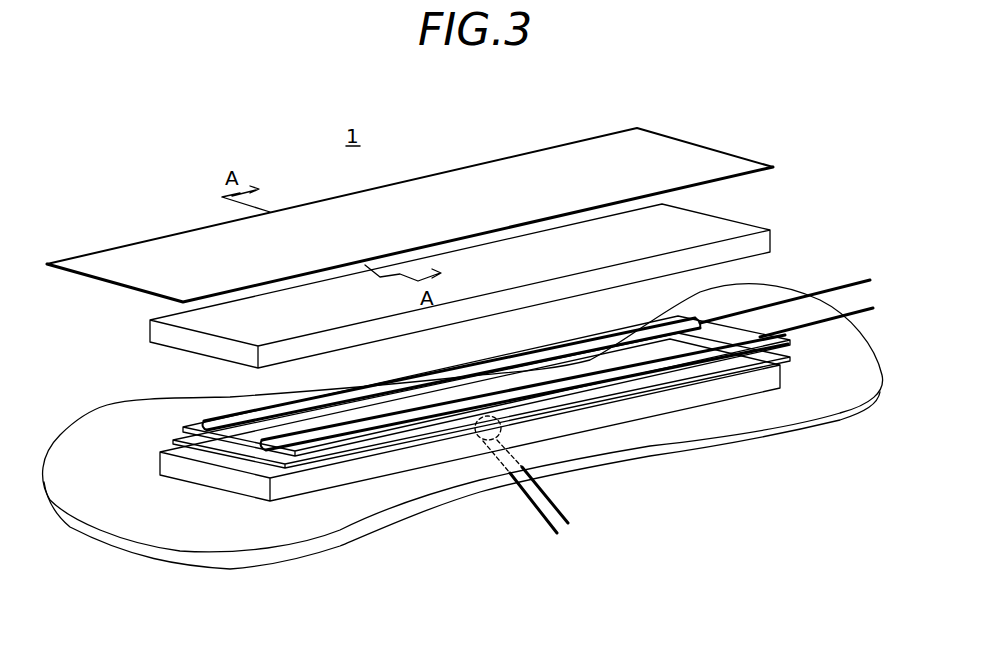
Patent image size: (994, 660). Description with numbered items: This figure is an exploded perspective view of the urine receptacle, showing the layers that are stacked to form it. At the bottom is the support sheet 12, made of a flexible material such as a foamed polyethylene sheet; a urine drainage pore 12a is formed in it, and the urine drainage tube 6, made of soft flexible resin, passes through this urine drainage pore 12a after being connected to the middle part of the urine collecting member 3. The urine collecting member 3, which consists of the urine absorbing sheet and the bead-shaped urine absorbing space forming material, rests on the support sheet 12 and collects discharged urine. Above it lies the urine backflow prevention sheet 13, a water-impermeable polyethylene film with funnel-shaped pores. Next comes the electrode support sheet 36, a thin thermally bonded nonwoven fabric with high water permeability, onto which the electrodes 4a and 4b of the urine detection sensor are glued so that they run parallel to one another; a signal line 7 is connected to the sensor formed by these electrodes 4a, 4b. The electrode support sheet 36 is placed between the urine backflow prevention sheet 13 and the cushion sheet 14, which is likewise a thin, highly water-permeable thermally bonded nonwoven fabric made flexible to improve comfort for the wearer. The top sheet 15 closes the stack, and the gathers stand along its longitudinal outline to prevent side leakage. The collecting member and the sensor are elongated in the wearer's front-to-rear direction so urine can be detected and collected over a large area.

The urine collecting member 3 is at (255, 487).
The electrode 4a is at (226, 418).
The electrode 4b is at (317, 433).
The urine drainage tube 6 is at (547, 502).
The signal line 7 is at (783, 300).
The support sheet 12 is at (335, 548).
The urine drainage pore 12a is at (517, 443).
The urine backflow prevention sheet 13 is at (197, 438).
The cushion sheet 14 is at (165, 332).
The top sheet 15 is at (178, 240).
The electrode support sheet 36 is at (200, 448).